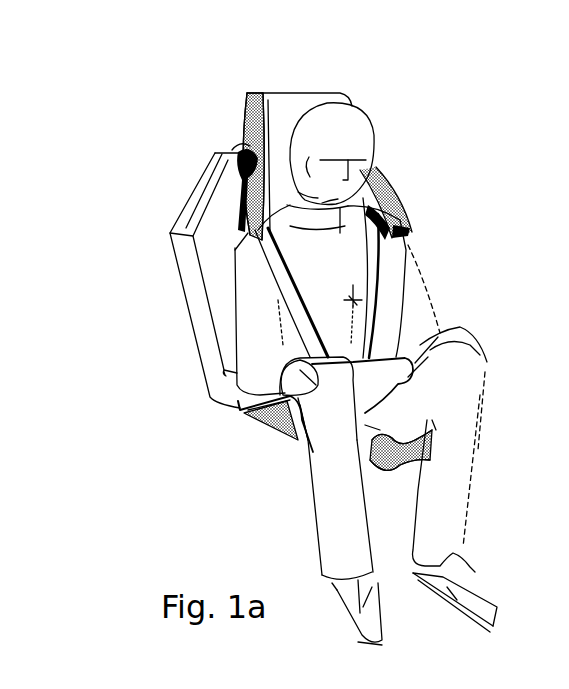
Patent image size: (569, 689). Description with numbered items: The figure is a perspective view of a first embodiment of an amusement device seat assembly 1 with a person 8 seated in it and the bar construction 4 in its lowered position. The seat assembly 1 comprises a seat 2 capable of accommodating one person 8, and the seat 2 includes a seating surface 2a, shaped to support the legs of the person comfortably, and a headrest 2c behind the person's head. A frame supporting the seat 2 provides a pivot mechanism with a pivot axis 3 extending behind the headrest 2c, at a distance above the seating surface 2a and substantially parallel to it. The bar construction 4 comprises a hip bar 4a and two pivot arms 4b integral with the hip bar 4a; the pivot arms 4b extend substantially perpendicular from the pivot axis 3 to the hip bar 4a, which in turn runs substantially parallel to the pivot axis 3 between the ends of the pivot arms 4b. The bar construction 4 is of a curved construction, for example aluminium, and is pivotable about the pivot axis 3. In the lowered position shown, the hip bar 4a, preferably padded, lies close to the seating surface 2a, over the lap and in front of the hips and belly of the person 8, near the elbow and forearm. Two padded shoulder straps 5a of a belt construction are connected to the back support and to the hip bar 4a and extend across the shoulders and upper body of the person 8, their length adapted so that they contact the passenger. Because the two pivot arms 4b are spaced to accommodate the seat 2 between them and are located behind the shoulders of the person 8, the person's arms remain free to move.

The amusement device seat assembly 1 is at (407, 84).
The seat 2 is at (220, 432).
The seating surface 2a is at (300, 455).
The headrest 2c is at (281, 110).
The pivot axis 3 is at (240, 150).
The bar construction 4 is at (186, 352).
The hip bar 4a is at (375, 375).
The pivot arms 4b is at (190, 278).
The shoulder straps 5a is at (460, 249).
The person 8 is at (350, 299).